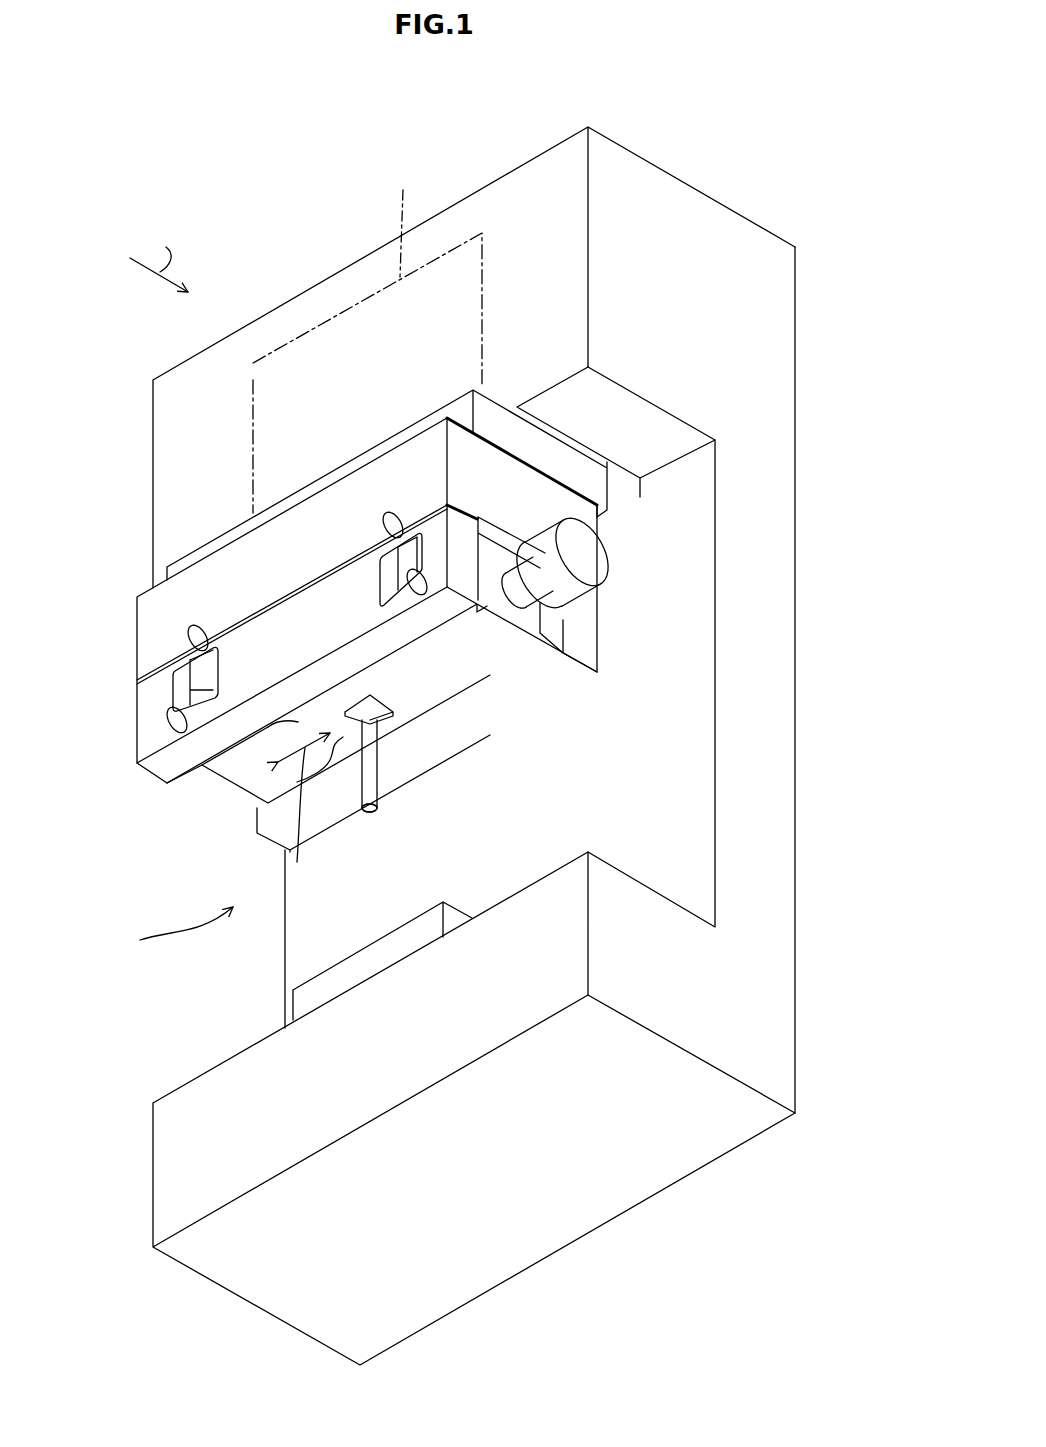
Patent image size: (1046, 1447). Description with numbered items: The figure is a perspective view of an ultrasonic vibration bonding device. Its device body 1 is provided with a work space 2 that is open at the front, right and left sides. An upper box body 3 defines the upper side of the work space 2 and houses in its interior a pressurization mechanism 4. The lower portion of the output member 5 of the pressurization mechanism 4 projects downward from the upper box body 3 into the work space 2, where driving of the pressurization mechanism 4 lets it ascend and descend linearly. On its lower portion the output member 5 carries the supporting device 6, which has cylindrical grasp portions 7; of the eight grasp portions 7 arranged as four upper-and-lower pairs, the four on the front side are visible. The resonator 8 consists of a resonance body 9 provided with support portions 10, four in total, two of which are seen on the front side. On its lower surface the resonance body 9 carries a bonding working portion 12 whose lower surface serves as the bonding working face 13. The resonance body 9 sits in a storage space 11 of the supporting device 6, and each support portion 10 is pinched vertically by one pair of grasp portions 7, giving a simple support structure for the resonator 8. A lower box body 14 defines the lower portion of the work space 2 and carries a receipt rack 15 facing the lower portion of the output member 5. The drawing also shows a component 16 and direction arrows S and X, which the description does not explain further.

The device body 1 is at (457, 746).
The work space 2 is at (172, 930).
The upper box body 3 is at (683, 196).
The pressurization mechanism 4 is at (404, 216).
The output member 5 is at (583, 456).
The supporting device 6 is at (128, 589).
The cylindrical grasp portions 7 is at (390, 518).
The resonator 8 is at (198, 784).
The resonance body 9 is at (248, 780).
The support portions 10 is at (408, 535).
The storage space 11 is at (192, 783).
The bonding working portion 12 is at (373, 783).
The bonding working face 13 is at (370, 814).
The lower box body 14 is at (172, 1138).
The receipt rack 15 is at (325, 968).
The motor 16 is at (603, 556).
The conveying direction S is at (159, 253).
The moving direction X is at (304, 814).